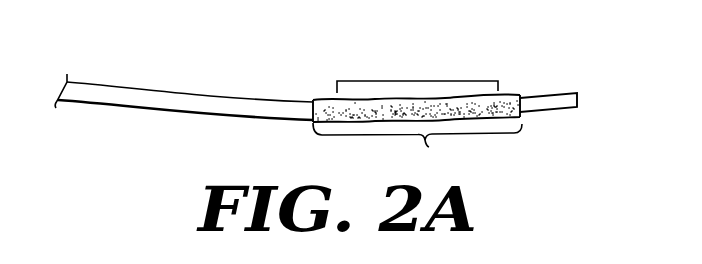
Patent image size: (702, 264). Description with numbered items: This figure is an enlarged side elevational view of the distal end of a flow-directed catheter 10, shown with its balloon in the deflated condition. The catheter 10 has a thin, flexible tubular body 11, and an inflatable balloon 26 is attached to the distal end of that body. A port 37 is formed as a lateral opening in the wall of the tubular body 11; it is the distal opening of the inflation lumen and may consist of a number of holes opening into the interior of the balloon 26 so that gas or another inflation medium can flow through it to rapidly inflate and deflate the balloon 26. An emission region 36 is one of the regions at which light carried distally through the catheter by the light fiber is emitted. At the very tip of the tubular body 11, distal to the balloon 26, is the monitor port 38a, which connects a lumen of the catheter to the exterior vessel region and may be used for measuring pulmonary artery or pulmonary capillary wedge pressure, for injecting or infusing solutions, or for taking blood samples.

The catheter 10 is at (160, 77).
The tubular body 11 is at (218, 98).
The inflatable balloon 26 is at (405, 97).
The port 37 is at (432, 80).
The emission region 36 is at (417, 148).
The monitor port 38a is at (580, 92).